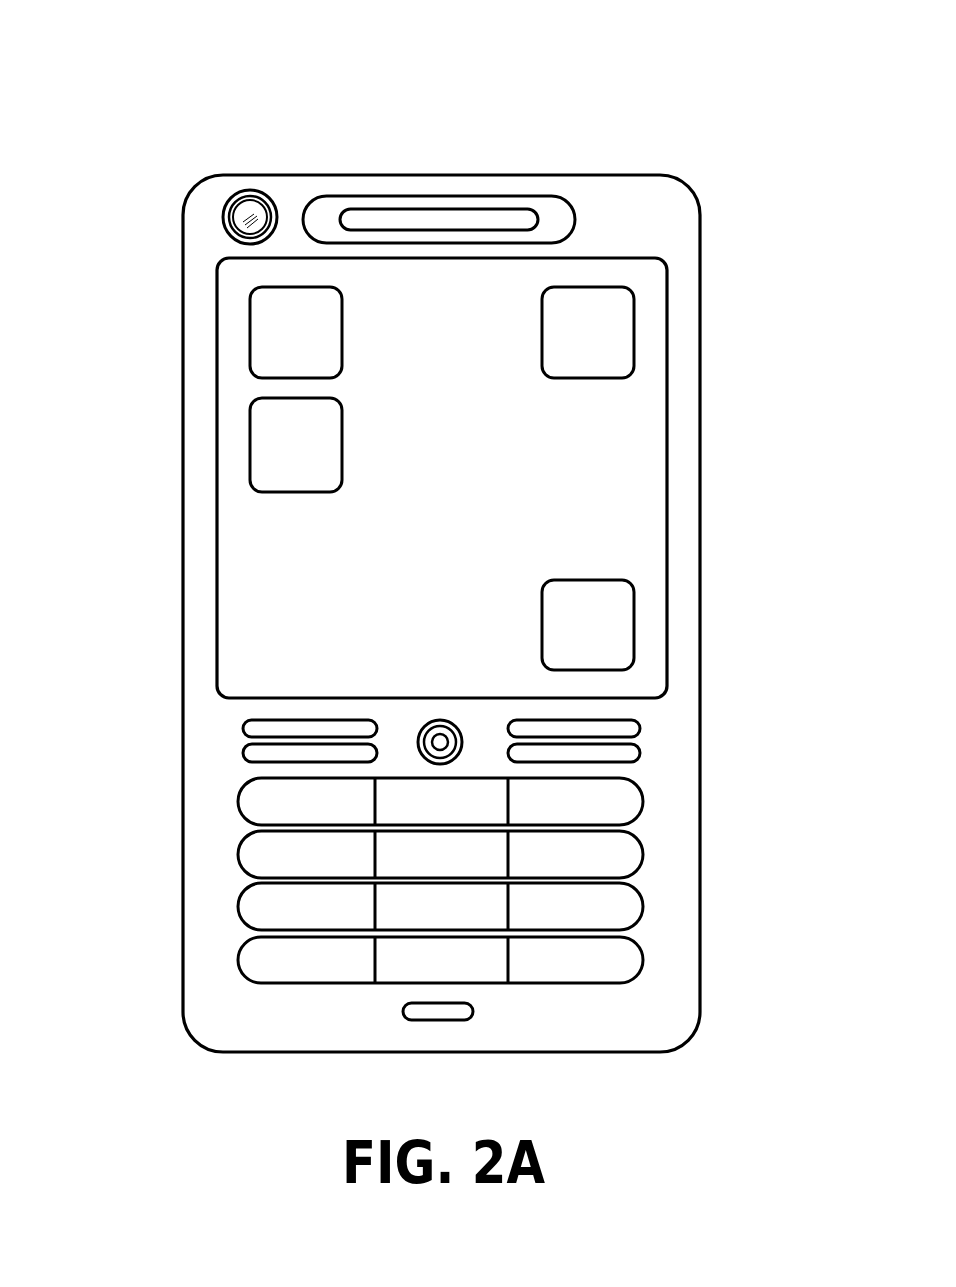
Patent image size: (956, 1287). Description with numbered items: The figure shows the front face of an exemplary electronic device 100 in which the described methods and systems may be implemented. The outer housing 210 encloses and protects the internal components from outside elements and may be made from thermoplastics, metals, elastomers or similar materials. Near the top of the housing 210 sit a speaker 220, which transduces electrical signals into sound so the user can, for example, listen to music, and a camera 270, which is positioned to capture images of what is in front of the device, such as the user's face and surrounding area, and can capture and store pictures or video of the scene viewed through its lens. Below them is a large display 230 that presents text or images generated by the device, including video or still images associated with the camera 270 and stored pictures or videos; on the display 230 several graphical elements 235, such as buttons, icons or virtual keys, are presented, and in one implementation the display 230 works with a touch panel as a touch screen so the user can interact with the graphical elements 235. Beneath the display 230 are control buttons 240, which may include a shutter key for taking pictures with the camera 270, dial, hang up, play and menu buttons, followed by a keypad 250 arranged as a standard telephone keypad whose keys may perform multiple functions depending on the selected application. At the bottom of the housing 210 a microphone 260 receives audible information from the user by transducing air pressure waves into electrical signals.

The electronic device 100 is at (195, 78).
The housing 210 is at (183, 233).
The speaker 220 is at (575, 218).
The display 230 is at (632, 422).
The graphical elements 235 is at (612, 640).
The control buttons 240 is at (645, 720).
The keypad 250 is at (662, 967).
The microphone 260 is at (440, 1020).
The camera 270 is at (268, 200).